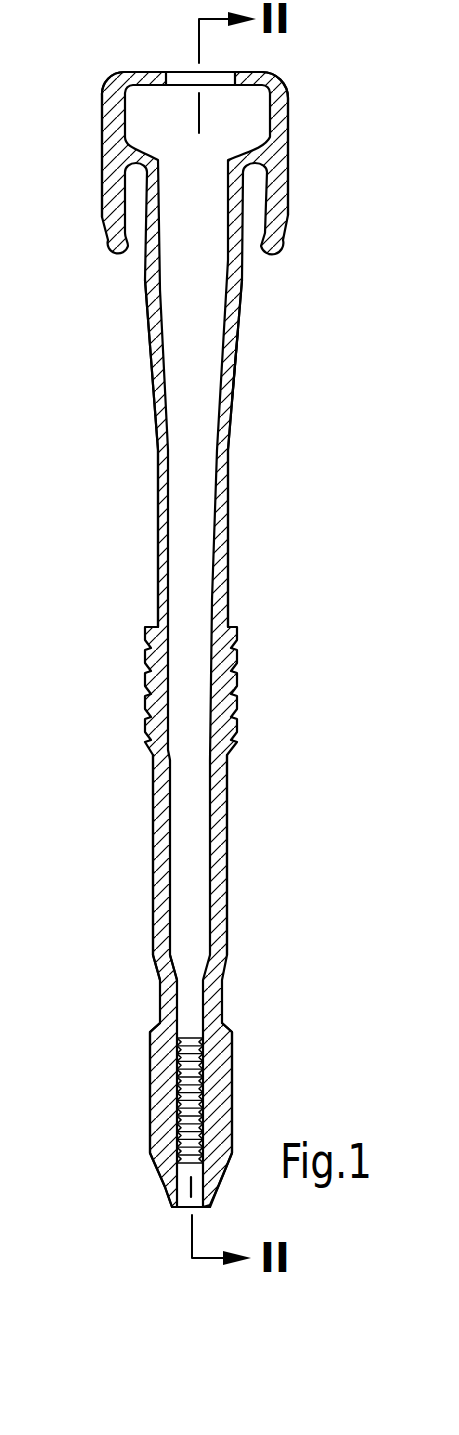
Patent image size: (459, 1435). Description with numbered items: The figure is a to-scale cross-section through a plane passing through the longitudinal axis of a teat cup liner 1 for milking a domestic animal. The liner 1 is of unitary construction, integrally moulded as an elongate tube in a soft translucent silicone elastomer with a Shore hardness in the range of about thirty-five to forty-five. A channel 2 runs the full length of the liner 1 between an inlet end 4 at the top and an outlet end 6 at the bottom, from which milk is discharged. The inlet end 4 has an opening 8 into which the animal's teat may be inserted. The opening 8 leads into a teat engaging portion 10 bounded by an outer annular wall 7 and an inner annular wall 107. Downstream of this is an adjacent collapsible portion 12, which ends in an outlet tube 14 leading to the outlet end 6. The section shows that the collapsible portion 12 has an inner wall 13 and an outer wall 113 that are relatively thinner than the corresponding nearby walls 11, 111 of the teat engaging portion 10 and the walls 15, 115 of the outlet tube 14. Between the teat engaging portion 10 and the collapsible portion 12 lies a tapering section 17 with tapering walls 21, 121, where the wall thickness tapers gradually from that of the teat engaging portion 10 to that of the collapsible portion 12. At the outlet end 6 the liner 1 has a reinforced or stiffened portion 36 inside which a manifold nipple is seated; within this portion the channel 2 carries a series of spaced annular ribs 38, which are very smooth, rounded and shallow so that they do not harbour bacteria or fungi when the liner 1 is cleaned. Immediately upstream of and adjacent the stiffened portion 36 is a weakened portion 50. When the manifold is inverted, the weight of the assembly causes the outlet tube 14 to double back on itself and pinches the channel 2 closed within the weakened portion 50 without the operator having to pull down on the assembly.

The teat cup liner 1 is at (304, 151).
The channel 2 is at (193, 645).
The inlet end 4 is at (98, 70).
The outlet end 6 is at (161, 1201).
The outer annular wall 7 is at (242, 276).
The opening 8 is at (180, 78).
The teat engaging portion 10 is at (142, 310).
The wall of the teat engaging portion 11 is at (238, 347).
The collapsible portion 12 is at (156, 548).
The inner wall of the collapsible portion 13 is at (228, 562).
The outlet tube 14 is at (152, 822).
The wall of the outlet tube 15 is at (228, 820).
The tapering section 17 is at (240, 413).
The tapering wall 21 is at (152, 370).
The reinforced portion 36 is at (160, 1085).
The annular ribs 38 is at (195, 1100).
The weakened portion 50 is at (160, 995).
The inner annular wall 107 is at (243, 295).
The wall of the teat engaging portion 111 is at (233, 376).
The outer wall of the collapsible portion 113 is at (218, 592).
The wall of the outlet tube 115 is at (216, 852).
The tapering wall 121 is at (160, 392).